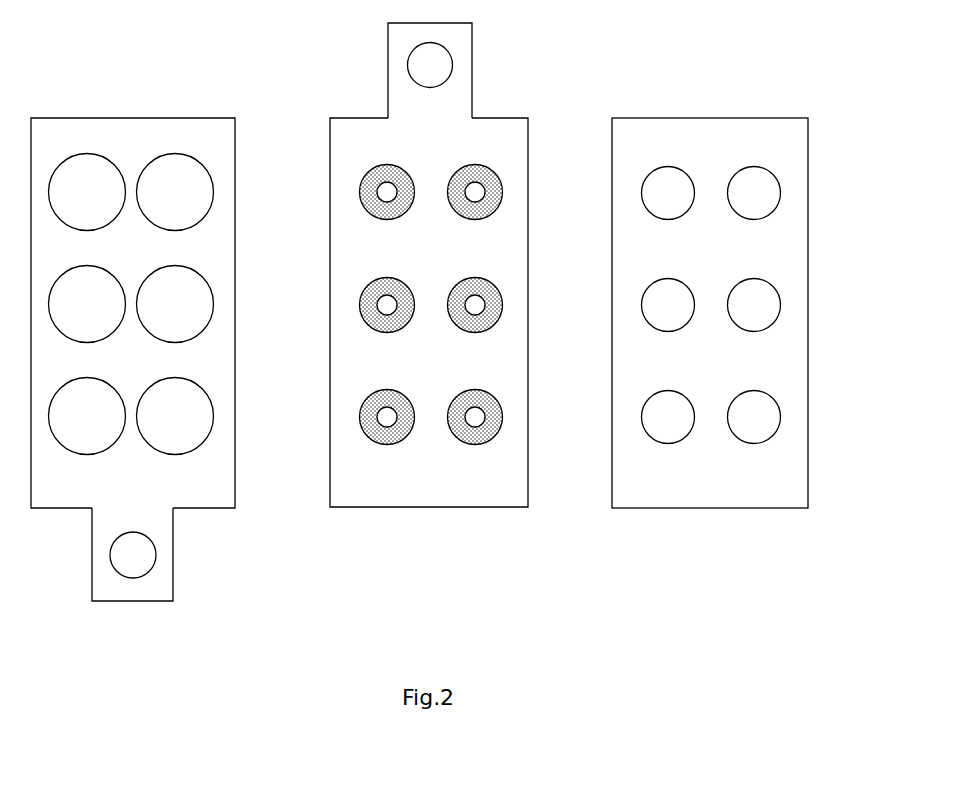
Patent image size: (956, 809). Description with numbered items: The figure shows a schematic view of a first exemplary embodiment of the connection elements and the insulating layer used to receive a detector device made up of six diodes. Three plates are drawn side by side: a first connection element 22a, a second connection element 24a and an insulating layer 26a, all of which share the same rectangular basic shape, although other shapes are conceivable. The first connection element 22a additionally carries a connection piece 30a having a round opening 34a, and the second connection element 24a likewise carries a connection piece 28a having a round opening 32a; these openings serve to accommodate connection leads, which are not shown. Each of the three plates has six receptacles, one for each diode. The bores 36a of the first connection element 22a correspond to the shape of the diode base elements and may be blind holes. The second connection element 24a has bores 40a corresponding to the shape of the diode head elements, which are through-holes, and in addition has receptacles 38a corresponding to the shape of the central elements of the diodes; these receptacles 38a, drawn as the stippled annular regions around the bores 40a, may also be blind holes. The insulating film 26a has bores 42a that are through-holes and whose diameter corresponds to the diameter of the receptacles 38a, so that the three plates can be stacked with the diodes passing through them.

The first connection element 22a is at (153, 130).
The second connection element 24a is at (513, 483).
The insulating layer 26a is at (798, 478).
The connection piece 28a is at (465, 35).
The connection piece 30a is at (163, 590).
The round opening 32a is at (418, 65).
The round opening 34a is at (122, 560).
The bores 36a is at (84, 153).
The receptacles 38a is at (366, 170).
The bores 40a is at (472, 188).
The bores 42a is at (663, 166).